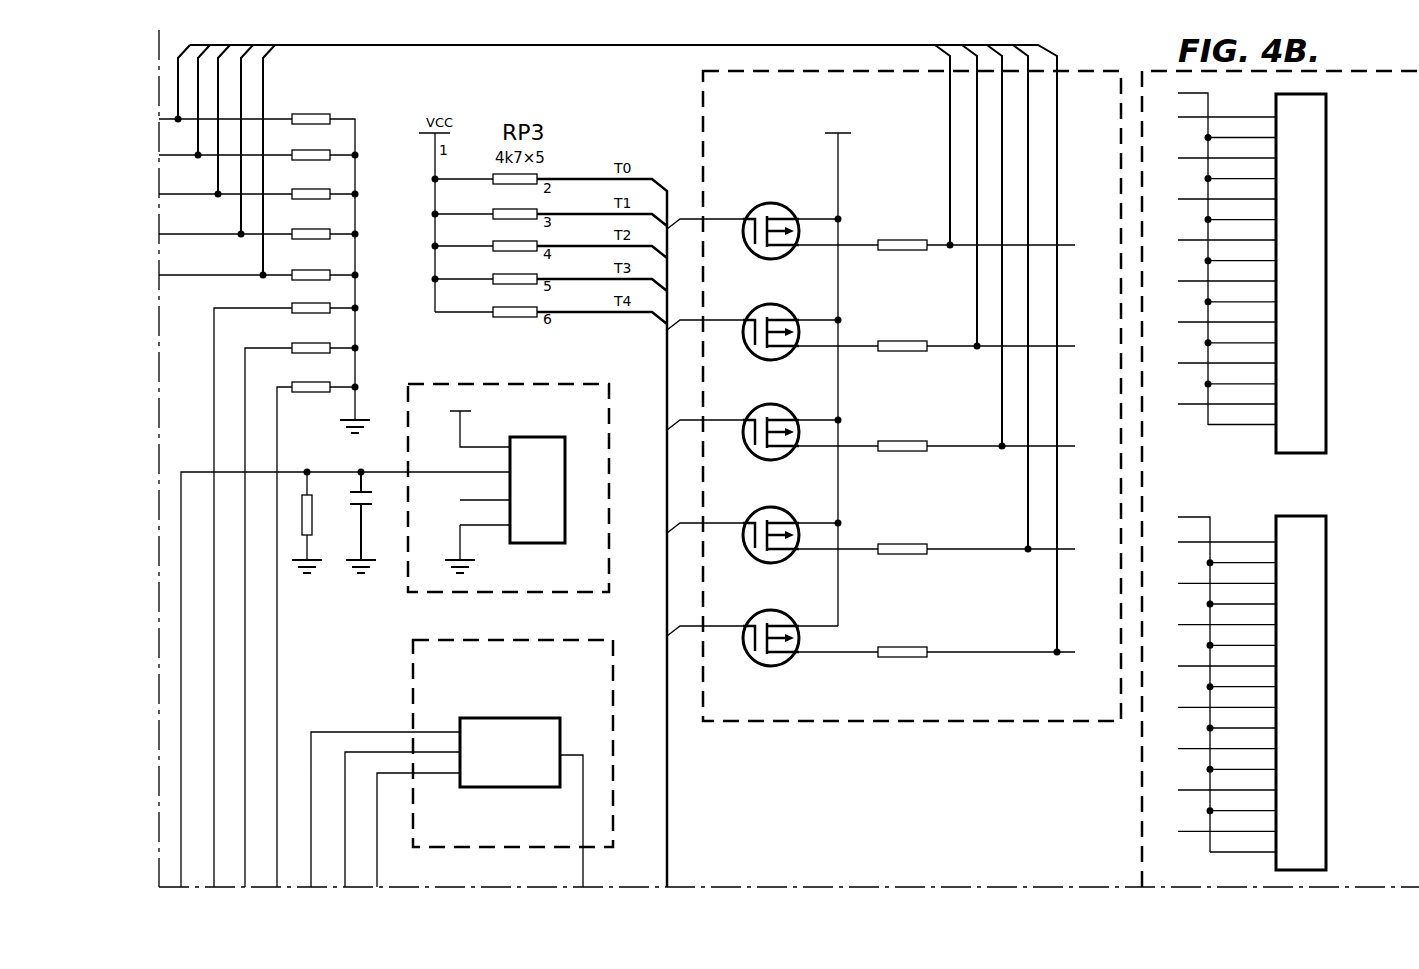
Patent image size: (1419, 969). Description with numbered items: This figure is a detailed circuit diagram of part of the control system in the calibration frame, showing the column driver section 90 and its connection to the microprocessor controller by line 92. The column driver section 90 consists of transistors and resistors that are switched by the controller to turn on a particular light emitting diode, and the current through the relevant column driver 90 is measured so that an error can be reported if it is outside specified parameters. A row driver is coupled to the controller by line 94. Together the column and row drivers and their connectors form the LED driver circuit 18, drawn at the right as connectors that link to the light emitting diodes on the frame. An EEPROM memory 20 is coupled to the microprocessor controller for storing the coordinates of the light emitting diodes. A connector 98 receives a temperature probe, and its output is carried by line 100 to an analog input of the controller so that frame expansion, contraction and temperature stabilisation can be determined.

The line 94 is at (582, 45).
The line 100 is at (190, 472).
The connector 98 is at (565, 510).
The line 92 is at (670, 783).
The column driver section 90 is at (997, 684).
The EEPROM memory 20 is at (513, 787).
The LED driver circuit 18 is at (1110, 850).